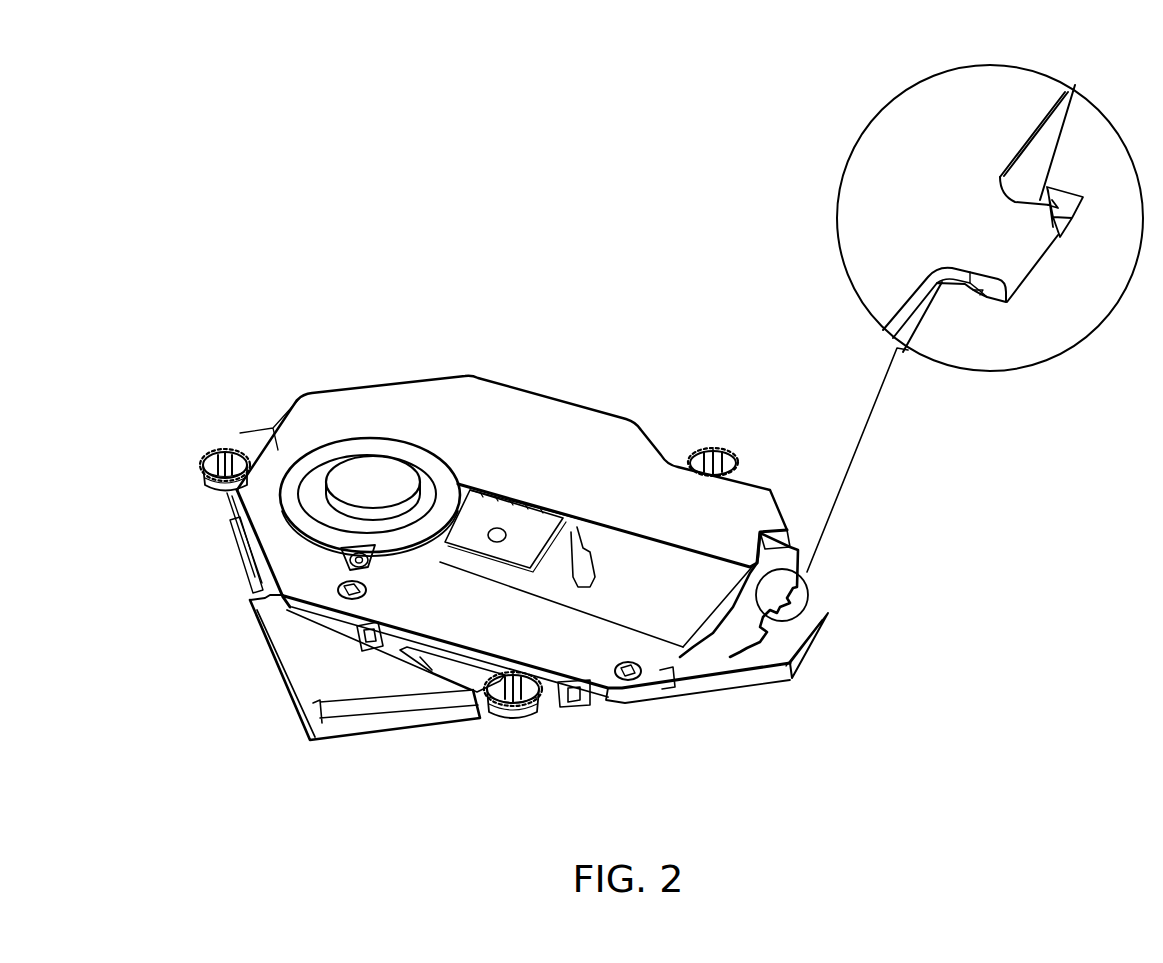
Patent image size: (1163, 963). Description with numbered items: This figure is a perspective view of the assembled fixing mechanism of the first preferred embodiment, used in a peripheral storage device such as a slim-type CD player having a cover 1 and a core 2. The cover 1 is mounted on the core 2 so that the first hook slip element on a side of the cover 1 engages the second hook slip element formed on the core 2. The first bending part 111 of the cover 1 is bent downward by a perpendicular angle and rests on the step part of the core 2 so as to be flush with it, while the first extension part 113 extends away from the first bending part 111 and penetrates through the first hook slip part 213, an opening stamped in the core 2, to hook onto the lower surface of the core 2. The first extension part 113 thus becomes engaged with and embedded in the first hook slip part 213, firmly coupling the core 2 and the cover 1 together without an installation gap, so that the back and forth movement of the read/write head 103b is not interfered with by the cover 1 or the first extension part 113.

The cover 1 is at (772, 492).
The core 2 is at (793, 681).
The read/write head 103b is at (378, 478).
The first bending part 111 is at (1019, 256).
The first extension part 113 is at (805, 607).
The first hook slip part 213 is at (1047, 203).